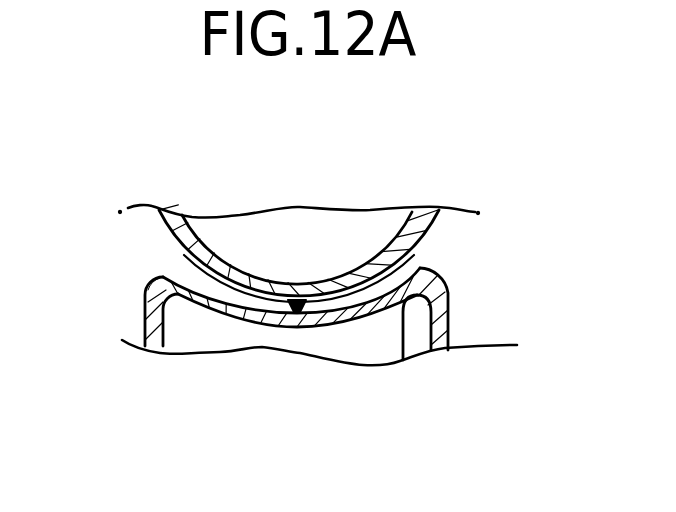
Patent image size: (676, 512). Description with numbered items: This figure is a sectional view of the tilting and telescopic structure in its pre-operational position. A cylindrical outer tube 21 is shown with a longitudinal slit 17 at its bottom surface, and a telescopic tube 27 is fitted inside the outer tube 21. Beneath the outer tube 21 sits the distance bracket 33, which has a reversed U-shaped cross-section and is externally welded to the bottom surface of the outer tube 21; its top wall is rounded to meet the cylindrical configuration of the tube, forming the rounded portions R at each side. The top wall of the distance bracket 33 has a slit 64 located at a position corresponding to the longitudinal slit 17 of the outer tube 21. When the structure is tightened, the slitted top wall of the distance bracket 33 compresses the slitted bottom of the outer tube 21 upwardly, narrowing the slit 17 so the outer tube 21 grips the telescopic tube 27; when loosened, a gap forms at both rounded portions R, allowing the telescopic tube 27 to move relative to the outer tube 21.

The telescopic tube 27 is at (381, 252).
The outer tube 21 is at (395, 273).
The distance bracket 33 is at (402, 308).
The longitudinal slit 17 is at (297, 309).
The slit 64 is at (297, 320).
The rounded portions R is at (216, 290).